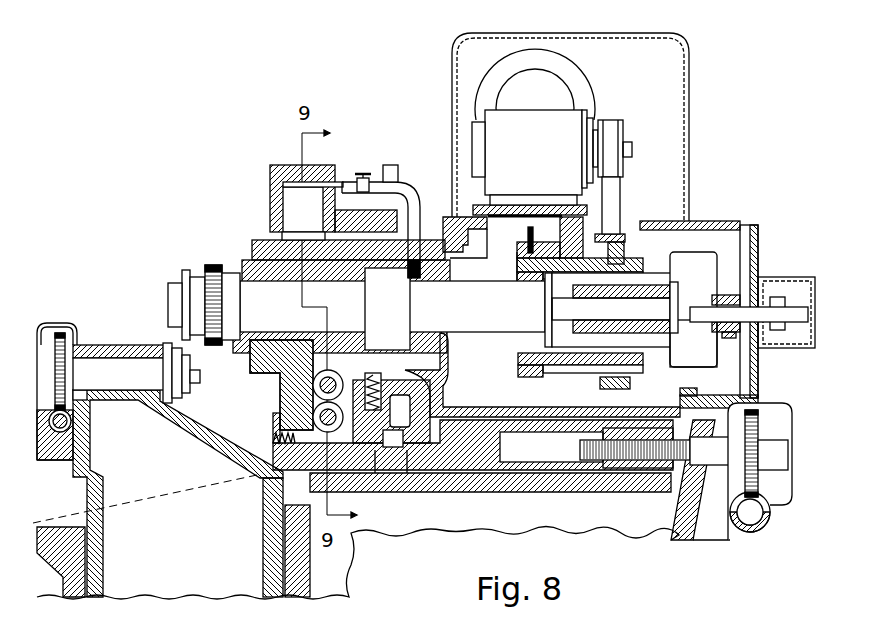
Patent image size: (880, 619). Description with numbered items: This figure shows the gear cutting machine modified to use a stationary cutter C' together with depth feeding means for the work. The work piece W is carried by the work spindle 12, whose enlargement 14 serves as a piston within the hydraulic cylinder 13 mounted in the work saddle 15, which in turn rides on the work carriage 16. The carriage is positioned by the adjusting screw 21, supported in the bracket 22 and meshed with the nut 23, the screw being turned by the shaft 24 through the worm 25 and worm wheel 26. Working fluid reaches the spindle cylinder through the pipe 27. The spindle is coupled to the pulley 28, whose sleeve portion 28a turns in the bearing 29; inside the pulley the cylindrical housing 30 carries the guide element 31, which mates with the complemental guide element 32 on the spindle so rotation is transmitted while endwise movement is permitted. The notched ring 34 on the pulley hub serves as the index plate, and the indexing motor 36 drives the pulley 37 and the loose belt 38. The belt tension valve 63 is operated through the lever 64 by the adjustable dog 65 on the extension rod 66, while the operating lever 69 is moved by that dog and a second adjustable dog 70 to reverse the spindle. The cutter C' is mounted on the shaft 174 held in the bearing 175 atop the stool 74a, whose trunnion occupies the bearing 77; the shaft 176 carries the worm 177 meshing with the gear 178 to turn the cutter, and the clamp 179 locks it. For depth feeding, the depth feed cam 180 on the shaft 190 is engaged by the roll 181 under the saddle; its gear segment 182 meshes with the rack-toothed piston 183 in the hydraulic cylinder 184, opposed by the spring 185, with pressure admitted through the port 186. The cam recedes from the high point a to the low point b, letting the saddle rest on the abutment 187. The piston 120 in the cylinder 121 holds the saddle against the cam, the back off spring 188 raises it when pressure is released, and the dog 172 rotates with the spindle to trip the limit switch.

The work spindle 12 is at (480, 323).
The hydraulic cylinder 13 is at (438, 343).
The enlargement 14 is at (371, 330).
The work saddle 15 is at (438, 243).
The work carriage 16 is at (460, 470).
The adjusting screw 21 is at (693, 447).
The bracket 22 is at (700, 480).
The nut 23 is at (617, 468).
The shaft 24 is at (760, 520).
The worm 25 is at (786, 511).
The worm wheel 26 is at (759, 433).
The pipe 27 is at (396, 170).
The pulley 28 is at (619, 242).
The sleeve portion 28a is at (530, 259).
The bearing 29 is at (553, 243).
The cylindrical housing 30 is at (591, 318).
The guide element 31 is at (656, 280).
The complemental guide element 32 is at (678, 297).
The notched ring 34 is at (627, 240).
The motor 36 is at (572, 77).
The pulley 37 is at (624, 132).
The belt 38 is at (614, 192).
The belt tension valve 63 is at (703, 364).
The lever 64 is at (732, 342).
The adjustable dog 65 is at (716, 252).
The extension rod 66 is at (767, 323).
The operating lever 69 is at (723, 304).
The adjustable dog 70 is at (782, 301).
The stool 74a is at (97, 491).
The bearing 77 is at (68, 565).
The piston 120 is at (292, 211).
The cylinder 121 is at (271, 170).
The dog 172 is at (513, 235).
The shaft 174 is at (113, 366).
The bearing 175 is at (97, 346).
The shaft 176 is at (53, 430).
The worm 177 is at (72, 423).
The gear 178 is at (78, 406).
The clamp 179 is at (176, 351).
The depth feed cam 180 is at (383, 440).
The roll 181 is at (313, 388).
The gear segment 182 is at (275, 472).
The piston 183 is at (360, 478).
The hydraulic cylinder 184 is at (409, 481).
The spring 185 is at (276, 431).
The port 186 is at (445, 407).
The abutment 187 is at (286, 383).
The back off spring 188 is at (391, 408).
The shaft 190 is at (301, 441).
The work piece W is at (213, 265).
The stationary cutter C' is at (163, 305).
The high point a is at (400, 411).
The low point b is at (313, 417).